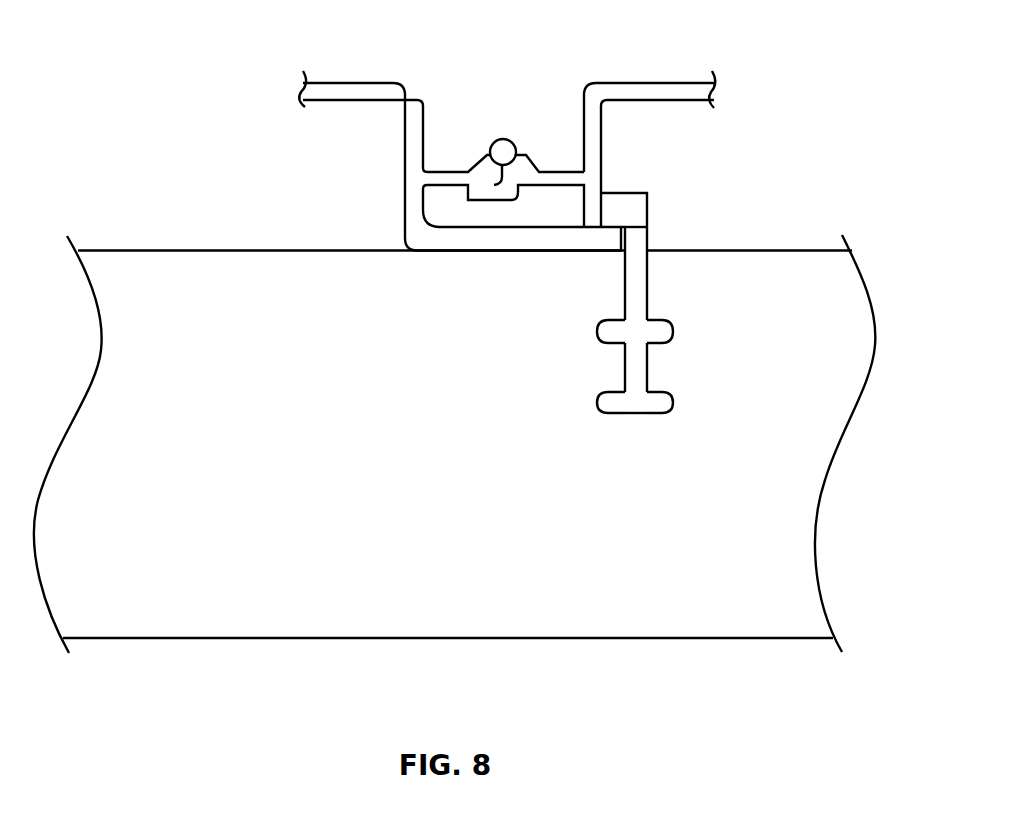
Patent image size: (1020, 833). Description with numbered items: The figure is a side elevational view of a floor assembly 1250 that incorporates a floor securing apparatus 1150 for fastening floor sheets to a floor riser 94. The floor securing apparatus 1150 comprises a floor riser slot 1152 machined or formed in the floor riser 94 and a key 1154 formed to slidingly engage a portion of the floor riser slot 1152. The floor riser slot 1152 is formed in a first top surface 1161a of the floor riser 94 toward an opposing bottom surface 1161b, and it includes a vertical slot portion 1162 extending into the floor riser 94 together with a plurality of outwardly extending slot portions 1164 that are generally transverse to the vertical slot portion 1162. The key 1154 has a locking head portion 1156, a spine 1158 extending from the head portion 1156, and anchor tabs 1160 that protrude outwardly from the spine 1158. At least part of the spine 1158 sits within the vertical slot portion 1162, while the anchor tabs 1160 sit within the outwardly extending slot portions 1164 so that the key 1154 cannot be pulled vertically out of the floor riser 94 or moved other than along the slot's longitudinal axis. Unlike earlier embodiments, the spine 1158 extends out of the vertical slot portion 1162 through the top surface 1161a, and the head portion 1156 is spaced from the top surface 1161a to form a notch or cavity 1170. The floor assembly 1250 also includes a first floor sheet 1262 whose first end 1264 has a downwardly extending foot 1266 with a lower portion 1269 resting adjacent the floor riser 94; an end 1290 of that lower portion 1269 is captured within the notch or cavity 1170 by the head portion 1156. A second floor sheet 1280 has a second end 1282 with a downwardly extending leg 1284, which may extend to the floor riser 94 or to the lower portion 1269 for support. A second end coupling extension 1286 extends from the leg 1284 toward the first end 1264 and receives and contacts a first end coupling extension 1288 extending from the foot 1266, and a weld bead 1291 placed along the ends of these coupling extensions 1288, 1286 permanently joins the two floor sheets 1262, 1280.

The floor riser 94 is at (813, 452).
The first top surface 1161a is at (148, 250).
The opposing bottom surface 1161b is at (180, 639).
The floor assembly 1250 is at (725, 162).
The first floor sheet 1262 is at (323, 93).
The first end 1264 is at (408, 83).
The downwardly extending foot 1266 is at (404, 128).
The lower portion 1269 is at (468, 240).
The first end coupling extension 1288 is at (436, 170).
The weld bead 1291 is at (504, 138).
The second end coupling extension 1286 is at (567, 172).
The downwardly extending leg 1284 is at (602, 127).
The second end 1282 is at (597, 83).
The second floor sheet 1280 is at (672, 91).
The locking head portion 1156 is at (613, 211).
The notch or cavity 1170 is at (632, 222).
The floor securing apparatus 1150 is at (660, 383).
The spine 1158 is at (625, 290).
The end 1290 is at (641, 276).
The anchor tabs 1160 is at (598, 326).
The outwardly extending slot portions 1164 is at (613, 346).
The key 1154 is at (627, 365).
The vertical slot portion 1162 is at (649, 358).
The floor riser slot 1152 is at (630, 428).